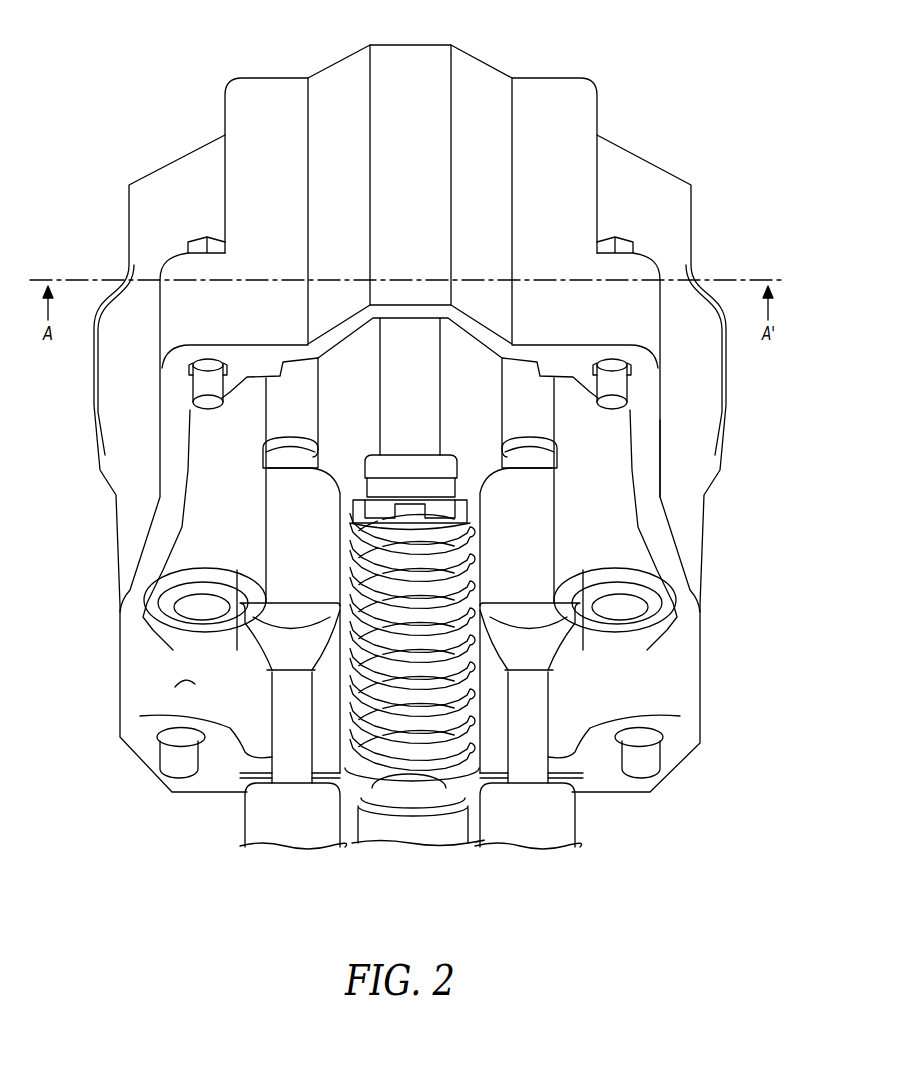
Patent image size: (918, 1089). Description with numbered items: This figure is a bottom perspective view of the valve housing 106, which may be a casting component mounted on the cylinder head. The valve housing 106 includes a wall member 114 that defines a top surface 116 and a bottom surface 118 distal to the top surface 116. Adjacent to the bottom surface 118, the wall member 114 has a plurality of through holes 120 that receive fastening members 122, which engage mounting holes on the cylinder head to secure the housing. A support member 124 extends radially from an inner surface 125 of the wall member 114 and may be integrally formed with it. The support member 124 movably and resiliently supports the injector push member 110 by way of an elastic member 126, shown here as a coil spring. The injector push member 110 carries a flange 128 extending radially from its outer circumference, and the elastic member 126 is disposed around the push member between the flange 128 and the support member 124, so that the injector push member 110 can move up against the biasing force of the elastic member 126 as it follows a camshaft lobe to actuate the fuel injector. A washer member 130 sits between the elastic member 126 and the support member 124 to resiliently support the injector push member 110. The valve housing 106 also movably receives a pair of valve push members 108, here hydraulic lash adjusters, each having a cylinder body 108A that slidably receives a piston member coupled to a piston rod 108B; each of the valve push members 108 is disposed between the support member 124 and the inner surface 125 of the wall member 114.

The valve housing 106 is at (677, 62).
The valve push members 108 is at (264, 727).
The cylinder body 108A is at (240, 658).
The piston rod 108B is at (265, 465).
The injector push member 110 is at (460, 826).
The wall member 114 is at (692, 247).
The top surface 116 is at (176, 165).
The bottom surface 118 is at (666, 553).
The through holes 120 is at (192, 368).
The fastening members 122 is at (190, 240).
The support member 124 is at (423, 463).
The inner surface 125 is at (190, 680).
The elastic member 126 is at (447, 696).
The flange 128 is at (257, 755).
The washer member 130 is at (355, 515).